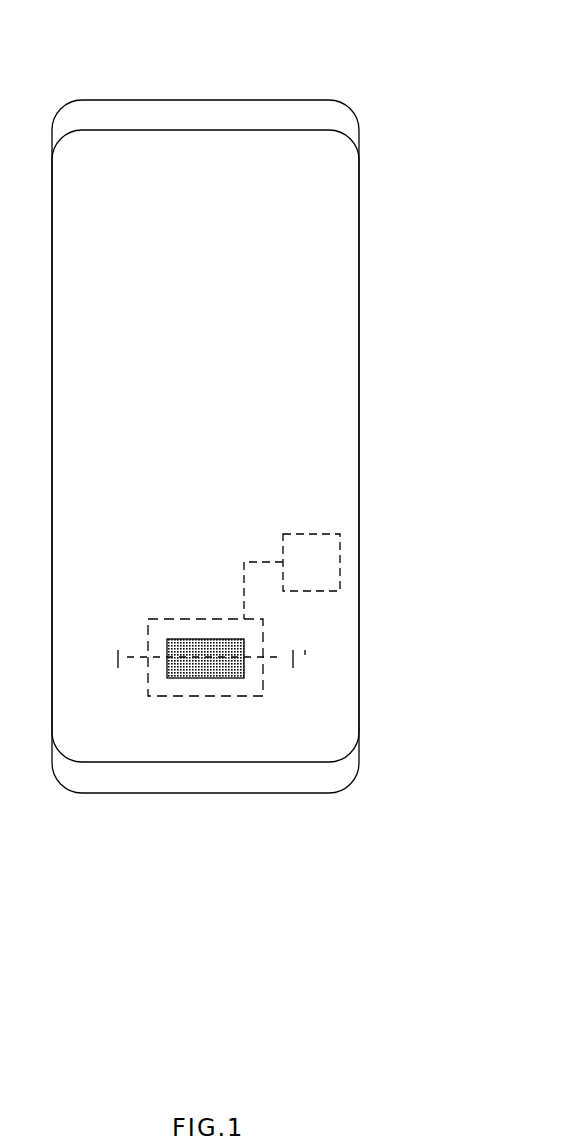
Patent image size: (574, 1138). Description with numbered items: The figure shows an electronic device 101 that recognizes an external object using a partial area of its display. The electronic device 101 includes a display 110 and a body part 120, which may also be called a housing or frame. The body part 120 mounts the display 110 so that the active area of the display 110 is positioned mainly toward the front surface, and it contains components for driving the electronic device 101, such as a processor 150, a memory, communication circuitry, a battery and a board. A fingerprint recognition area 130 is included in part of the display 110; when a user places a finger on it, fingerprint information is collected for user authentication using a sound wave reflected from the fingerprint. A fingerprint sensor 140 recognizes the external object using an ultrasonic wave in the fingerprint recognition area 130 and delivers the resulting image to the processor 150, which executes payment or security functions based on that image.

The electronic device 101 is at (292, 70).
The display 110 is at (348, 197).
The body part 120 is at (360, 128).
The fingerprint recognition area 130 is at (263, 638).
The fingerprint sensor 140 is at (240, 668).
The processor 150 is at (340, 560).